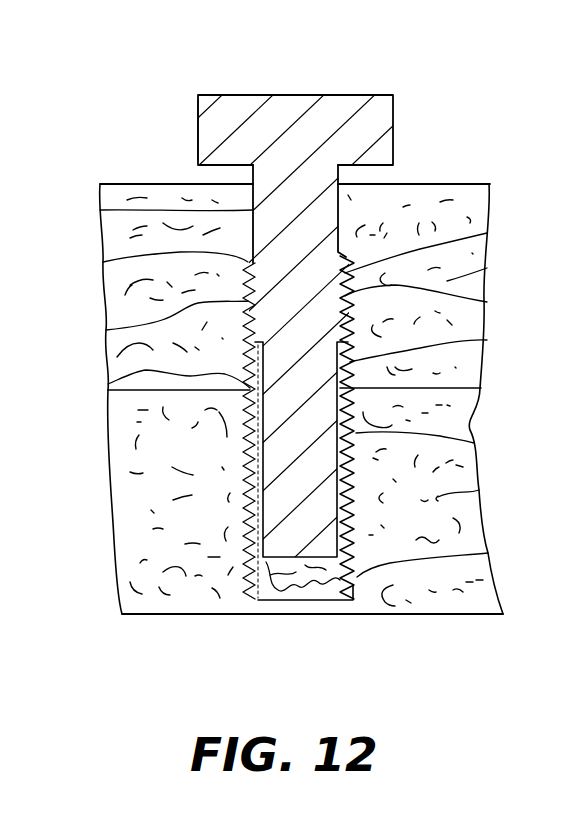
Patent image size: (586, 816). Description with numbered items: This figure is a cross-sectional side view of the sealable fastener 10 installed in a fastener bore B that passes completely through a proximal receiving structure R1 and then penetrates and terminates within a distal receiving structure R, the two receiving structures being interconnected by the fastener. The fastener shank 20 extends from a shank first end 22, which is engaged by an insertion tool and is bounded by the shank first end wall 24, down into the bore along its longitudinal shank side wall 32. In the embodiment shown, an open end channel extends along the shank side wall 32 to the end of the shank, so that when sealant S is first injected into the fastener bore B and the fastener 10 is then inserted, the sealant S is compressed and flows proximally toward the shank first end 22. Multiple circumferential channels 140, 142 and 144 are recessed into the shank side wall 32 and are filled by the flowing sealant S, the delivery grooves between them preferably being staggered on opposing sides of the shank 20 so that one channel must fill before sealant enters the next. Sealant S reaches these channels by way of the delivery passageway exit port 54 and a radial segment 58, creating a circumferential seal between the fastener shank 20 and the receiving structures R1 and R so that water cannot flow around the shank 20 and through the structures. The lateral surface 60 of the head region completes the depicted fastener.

The sealable fastener 10 is at (450, 115).
The shank first end wall 24 is at (227, 95).
The head side surface 60 is at (198, 118).
The shank first end 22 is at (200, 156).
The fastener shank 20 is at (102, 208).
The fastener bore B is at (293, 408).
The longitudinal shank side wall 32 is at (487, 233).
The proximal receiving structure R1 is at (487, 268).
The circumferential channel 140 is at (487, 302).
The radial segment 58 is at (104, 264).
The delivery passageway exit port 54 is at (106, 330).
The sealant S is at (487, 340).
The circumferential channel 142 is at (474, 443).
The distal receiving structure R is at (479, 490).
The circumferential channel 144 is at (488, 553).